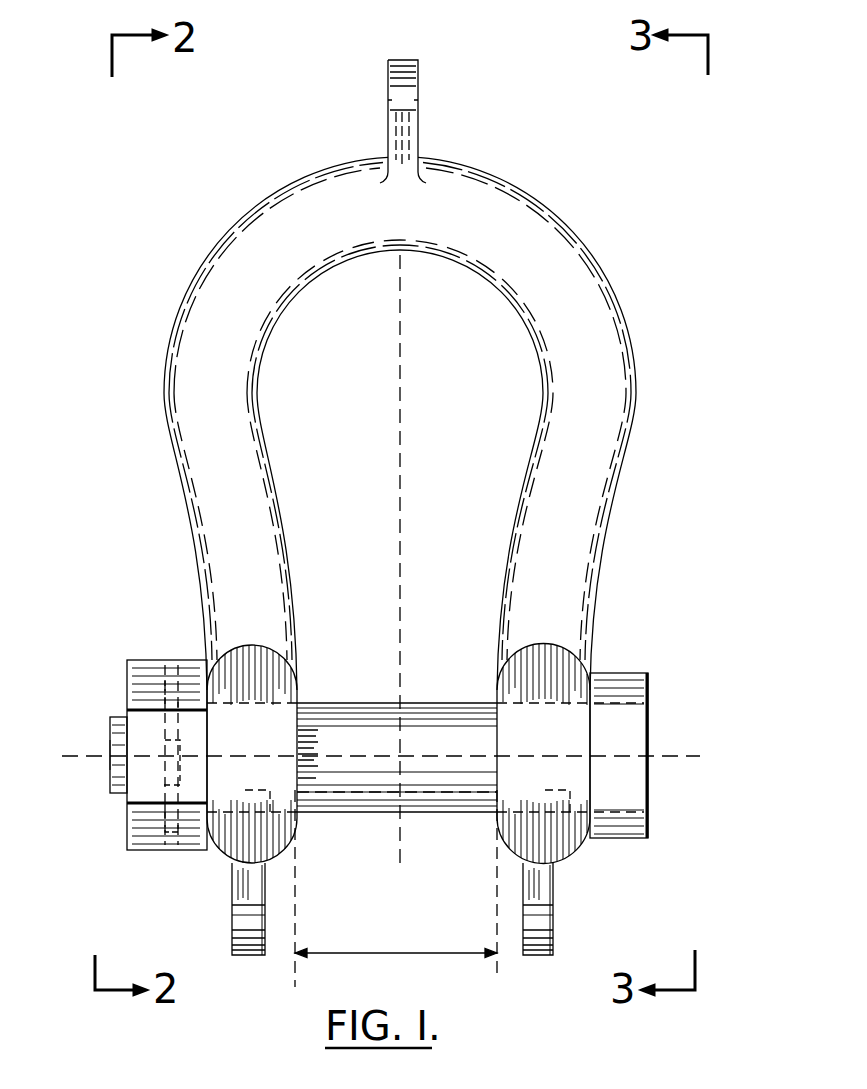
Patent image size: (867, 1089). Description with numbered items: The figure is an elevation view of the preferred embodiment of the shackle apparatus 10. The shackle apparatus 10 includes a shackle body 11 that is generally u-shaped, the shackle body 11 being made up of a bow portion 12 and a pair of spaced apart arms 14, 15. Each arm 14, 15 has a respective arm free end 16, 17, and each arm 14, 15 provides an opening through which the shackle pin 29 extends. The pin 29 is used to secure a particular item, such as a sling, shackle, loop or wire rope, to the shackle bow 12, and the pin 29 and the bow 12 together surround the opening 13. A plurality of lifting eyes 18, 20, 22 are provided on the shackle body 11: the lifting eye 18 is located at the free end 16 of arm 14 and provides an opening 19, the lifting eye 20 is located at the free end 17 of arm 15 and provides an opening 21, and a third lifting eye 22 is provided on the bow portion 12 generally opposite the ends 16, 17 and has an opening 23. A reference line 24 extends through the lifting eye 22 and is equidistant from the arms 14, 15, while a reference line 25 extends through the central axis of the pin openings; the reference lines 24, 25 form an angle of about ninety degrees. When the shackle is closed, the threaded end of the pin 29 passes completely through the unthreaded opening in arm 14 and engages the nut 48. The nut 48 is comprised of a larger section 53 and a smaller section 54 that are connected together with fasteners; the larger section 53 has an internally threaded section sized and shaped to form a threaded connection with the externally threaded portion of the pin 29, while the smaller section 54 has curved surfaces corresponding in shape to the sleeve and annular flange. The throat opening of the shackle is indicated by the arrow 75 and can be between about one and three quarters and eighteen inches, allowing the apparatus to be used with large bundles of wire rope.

The shackle apparatus 10 is at (532, 84).
The shackle body 11 is at (617, 311).
The bow portion 12 is at (240, 323).
The opening 13 is at (484, 331).
The arm 14 is at (257, 600).
The arm 15 is at (566, 583).
The arm free end 16 is at (276, 858).
The arm free end 17 is at (573, 856).
The lifting eye 18 is at (246, 957).
The opening 19 is at (222, 920).
The lifting eye 20 is at (527, 955).
The opening 21 is at (512, 919).
The third lifting eye 22 is at (420, 63).
The opening 23 is at (379, 107).
The reference line 24 is at (389, 371).
The reference line 25 is at (86, 763).
The shackle pin 29 is at (432, 702).
The nut 48 is at (138, 660).
The larger section 53 is at (133, 684).
The smaller section 54 is at (187, 846).
The throat opening arrow 75 is at (396, 950).